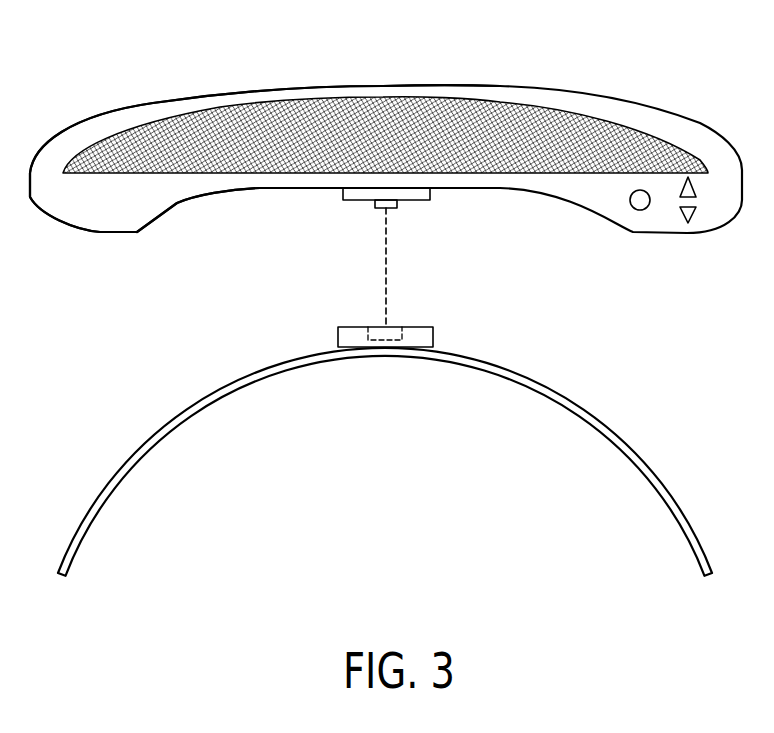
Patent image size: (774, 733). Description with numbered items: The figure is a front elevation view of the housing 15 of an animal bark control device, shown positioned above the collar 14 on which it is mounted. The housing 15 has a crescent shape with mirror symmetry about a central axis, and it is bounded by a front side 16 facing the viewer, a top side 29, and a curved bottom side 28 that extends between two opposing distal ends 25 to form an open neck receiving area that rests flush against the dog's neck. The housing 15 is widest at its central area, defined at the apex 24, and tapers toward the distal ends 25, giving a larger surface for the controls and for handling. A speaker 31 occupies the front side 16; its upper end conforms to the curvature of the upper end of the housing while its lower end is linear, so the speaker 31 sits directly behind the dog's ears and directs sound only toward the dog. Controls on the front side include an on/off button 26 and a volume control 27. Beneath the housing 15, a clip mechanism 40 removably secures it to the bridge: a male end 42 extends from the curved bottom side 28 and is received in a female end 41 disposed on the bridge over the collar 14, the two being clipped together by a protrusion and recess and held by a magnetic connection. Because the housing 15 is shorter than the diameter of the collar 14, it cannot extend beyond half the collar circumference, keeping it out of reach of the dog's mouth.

The collar 14 is at (683, 504).
The housing 15 is at (665, 105).
The front side 16 is at (68, 215).
The apex 24 is at (388, 85).
The distal ends 25 is at (115, 233).
The on/off button 26 is at (643, 208).
The volume control 27 is at (697, 210).
The curved bottom side 28 is at (197, 197).
The top side 29 is at (290, 85).
The speaker 31 is at (163, 138).
The clip mechanism 40 is at (350, 253).
The female end 41 is at (397, 333).
The male end 42 is at (398, 207).